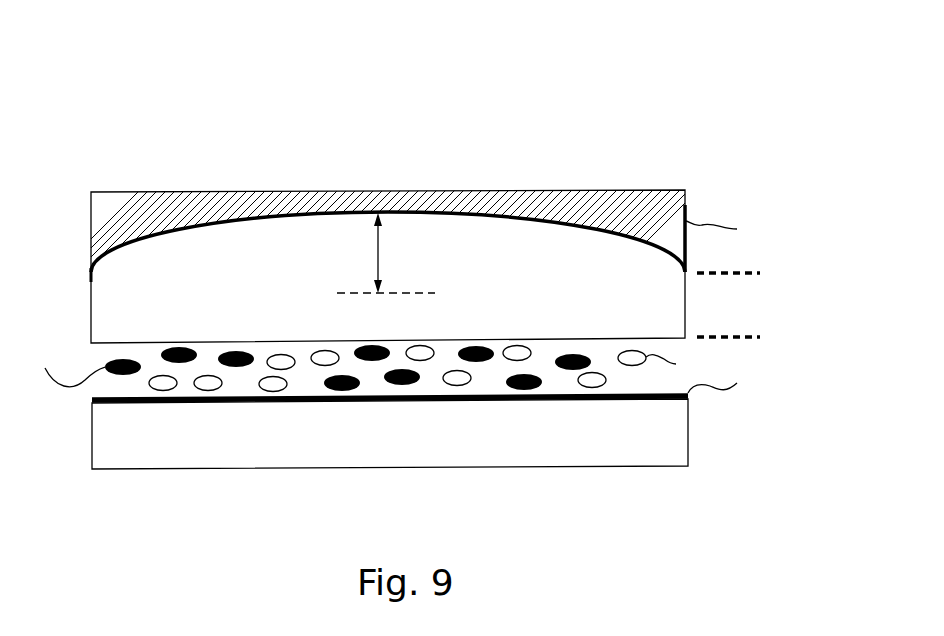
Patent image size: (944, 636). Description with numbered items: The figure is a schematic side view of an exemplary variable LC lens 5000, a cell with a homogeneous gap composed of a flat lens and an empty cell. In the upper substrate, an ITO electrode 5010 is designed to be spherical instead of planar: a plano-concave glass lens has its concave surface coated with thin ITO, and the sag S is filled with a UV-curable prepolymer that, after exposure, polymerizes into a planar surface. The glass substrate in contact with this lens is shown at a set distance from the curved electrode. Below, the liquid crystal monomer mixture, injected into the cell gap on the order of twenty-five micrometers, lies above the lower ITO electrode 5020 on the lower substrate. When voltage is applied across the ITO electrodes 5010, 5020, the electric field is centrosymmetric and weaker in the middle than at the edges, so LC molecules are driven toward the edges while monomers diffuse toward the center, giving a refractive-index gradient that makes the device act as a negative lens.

The LC lens 5000 is at (583, 110).
The ITO electrode 5010 is at (685, 206).
The ITO electrode 5020 is at (658, 398).